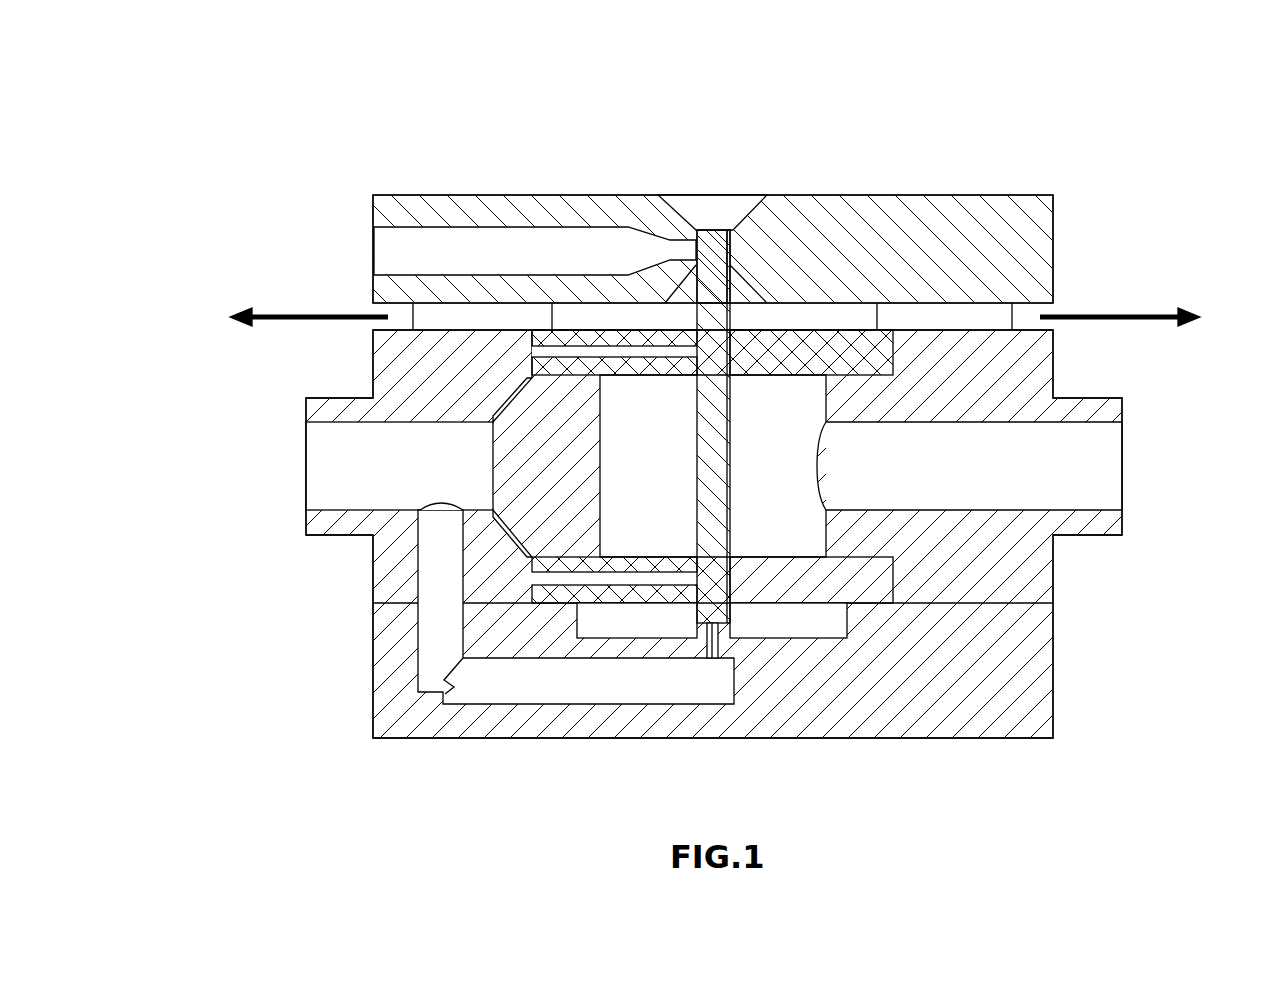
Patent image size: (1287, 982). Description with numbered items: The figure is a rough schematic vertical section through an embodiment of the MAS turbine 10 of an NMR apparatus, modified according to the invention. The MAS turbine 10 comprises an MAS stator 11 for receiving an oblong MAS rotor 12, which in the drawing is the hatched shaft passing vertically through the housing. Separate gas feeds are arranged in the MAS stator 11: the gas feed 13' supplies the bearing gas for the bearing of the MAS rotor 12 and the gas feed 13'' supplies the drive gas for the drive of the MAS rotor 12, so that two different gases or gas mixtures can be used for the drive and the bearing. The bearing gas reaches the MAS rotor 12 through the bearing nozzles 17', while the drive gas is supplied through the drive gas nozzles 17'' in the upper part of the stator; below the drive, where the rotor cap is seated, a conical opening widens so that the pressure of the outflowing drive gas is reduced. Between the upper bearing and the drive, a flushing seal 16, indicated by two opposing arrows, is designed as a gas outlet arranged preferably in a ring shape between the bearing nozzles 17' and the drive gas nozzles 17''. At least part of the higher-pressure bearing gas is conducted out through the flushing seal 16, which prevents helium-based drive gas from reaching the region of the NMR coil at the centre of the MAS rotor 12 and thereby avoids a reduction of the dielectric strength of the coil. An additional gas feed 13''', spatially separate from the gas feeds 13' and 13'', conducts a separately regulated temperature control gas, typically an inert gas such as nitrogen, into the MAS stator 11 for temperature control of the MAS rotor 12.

The MAS turbine 10 is at (270, 142).
The MAS stator 11 is at (1053, 588).
The MAS rotor 12 is at (1050, 242).
The gas feed for the bearing 13' is at (399, 466).
The gas feed for the drive 13'' is at (535, 251).
The additional gas feed 13''' is at (974, 466).
The flushing seal 16 is at (719, 321).
The bearing nozzles 17' is at (787, 720).
The drive gas nozzles 17'' is at (672, 204).